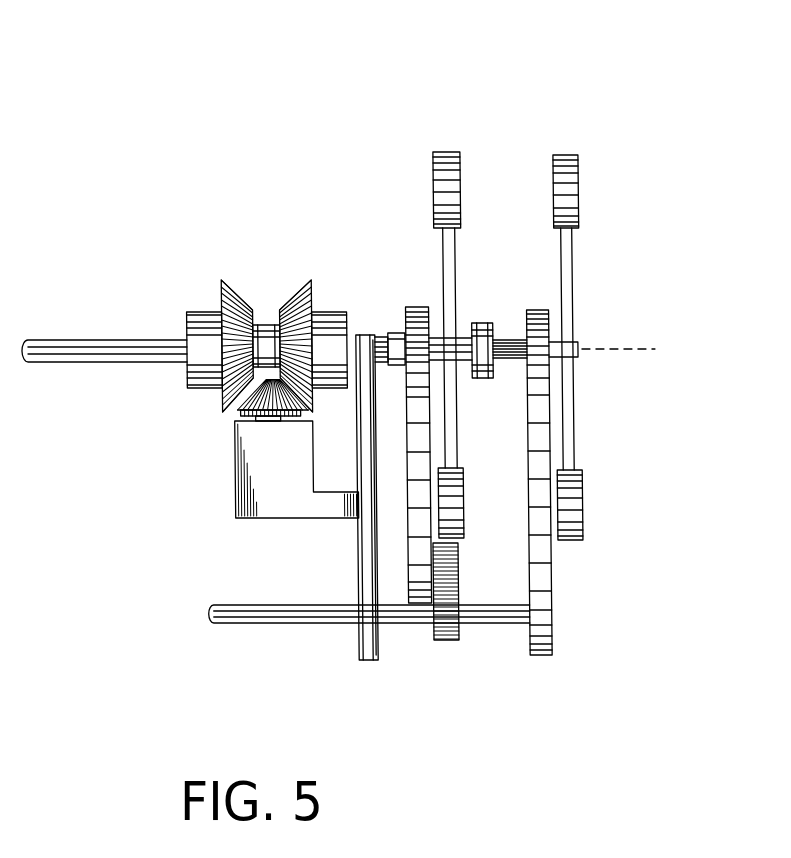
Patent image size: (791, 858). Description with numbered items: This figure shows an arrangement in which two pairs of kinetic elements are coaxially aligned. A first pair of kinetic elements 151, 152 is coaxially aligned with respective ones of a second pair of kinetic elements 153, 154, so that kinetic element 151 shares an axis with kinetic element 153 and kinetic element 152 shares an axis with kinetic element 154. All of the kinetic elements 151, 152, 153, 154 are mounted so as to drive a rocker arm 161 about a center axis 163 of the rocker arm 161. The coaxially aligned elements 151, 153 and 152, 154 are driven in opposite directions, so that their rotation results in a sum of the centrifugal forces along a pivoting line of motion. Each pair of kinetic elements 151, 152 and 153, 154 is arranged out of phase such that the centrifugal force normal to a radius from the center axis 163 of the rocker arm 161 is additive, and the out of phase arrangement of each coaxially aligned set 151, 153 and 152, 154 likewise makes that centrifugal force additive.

The kinetic element 151 is at (436, 160).
The kinetic element 152 is at (462, 503).
The kinetic element 153 is at (555, 178).
The kinetic element 154 is at (581, 520).
The rocker arm 161 is at (475, 323).
The center axis 163 is at (595, 348).